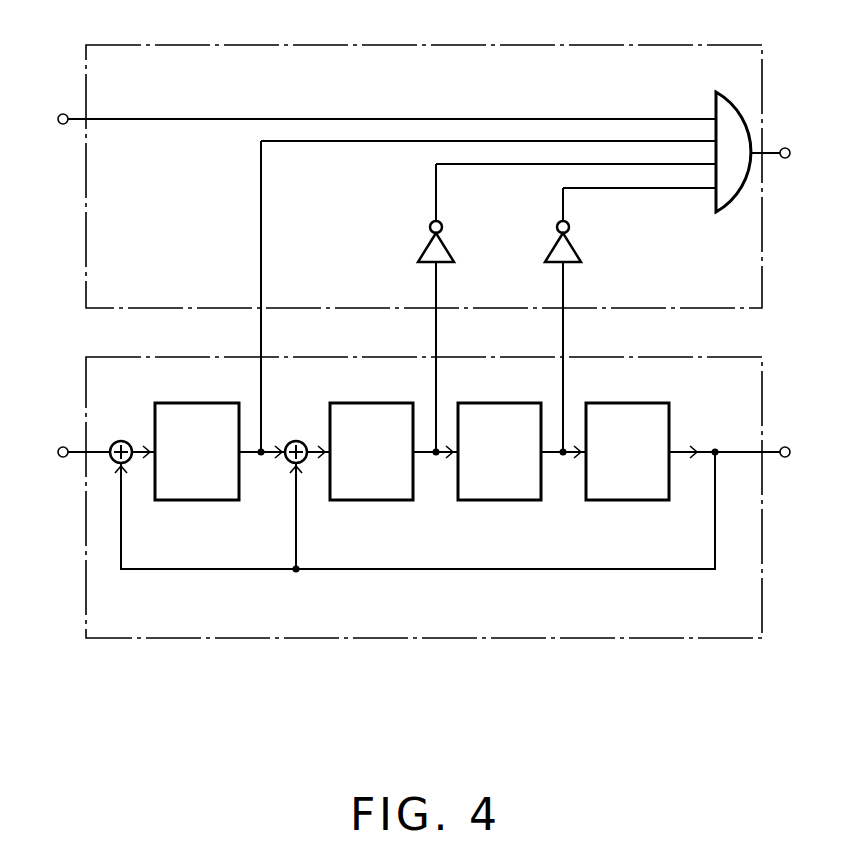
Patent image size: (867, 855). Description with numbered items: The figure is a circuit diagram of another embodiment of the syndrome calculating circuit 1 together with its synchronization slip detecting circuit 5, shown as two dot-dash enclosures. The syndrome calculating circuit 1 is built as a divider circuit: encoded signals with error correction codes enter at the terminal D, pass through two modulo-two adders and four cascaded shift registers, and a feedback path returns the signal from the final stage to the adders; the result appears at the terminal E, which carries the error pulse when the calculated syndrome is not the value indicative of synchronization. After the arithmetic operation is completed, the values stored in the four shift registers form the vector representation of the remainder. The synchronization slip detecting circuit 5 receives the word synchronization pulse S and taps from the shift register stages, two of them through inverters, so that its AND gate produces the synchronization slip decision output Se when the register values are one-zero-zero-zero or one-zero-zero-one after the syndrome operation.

The synchronization slip detecting circuit 5 is at (597, 46).
The syndrome calculating circuit 1 is at (656, 639).
The word synchronization pulse S is at (62, 107).
The synchronization slip decision output Se is at (785, 143).
The terminal D is at (63, 466).
The terminal E is at (785, 439).